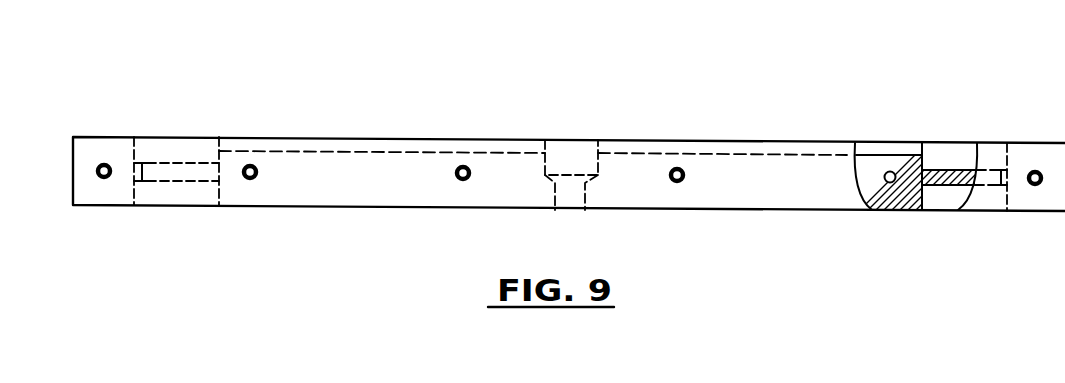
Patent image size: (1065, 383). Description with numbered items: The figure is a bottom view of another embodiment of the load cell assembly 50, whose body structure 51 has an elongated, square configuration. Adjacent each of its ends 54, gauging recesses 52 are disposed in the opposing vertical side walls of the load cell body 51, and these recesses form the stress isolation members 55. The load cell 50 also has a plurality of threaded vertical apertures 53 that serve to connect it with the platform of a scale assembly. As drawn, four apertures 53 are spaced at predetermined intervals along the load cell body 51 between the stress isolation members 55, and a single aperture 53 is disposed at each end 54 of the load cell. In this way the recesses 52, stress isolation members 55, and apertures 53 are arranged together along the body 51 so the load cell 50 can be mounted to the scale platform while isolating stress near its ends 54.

The load cell assembly 50 is at (713, 100).
The body structure 51 is at (372, 192).
The gauging recess 52 is at (175, 151).
The threaded vertical aperture 53 is at (462, 165).
The end 54 is at (97, 198).
The stress isolation member 55 is at (177, 173).